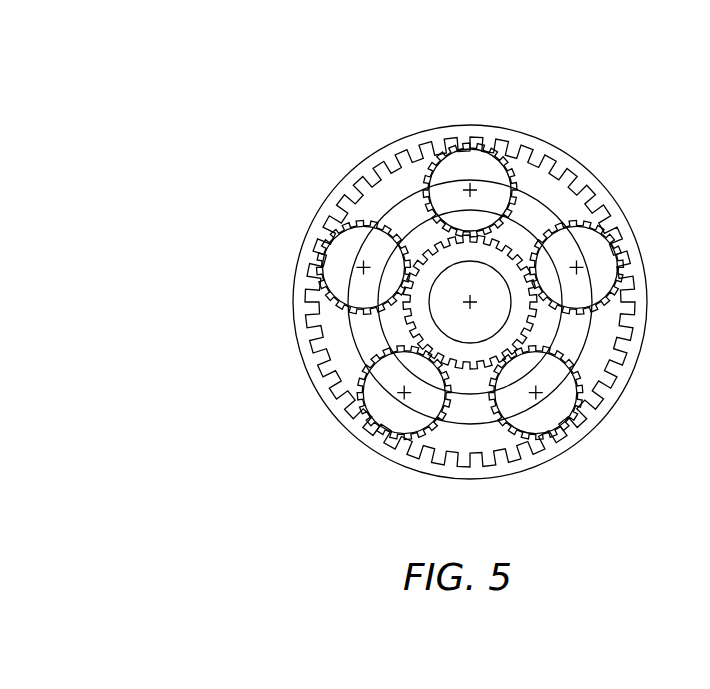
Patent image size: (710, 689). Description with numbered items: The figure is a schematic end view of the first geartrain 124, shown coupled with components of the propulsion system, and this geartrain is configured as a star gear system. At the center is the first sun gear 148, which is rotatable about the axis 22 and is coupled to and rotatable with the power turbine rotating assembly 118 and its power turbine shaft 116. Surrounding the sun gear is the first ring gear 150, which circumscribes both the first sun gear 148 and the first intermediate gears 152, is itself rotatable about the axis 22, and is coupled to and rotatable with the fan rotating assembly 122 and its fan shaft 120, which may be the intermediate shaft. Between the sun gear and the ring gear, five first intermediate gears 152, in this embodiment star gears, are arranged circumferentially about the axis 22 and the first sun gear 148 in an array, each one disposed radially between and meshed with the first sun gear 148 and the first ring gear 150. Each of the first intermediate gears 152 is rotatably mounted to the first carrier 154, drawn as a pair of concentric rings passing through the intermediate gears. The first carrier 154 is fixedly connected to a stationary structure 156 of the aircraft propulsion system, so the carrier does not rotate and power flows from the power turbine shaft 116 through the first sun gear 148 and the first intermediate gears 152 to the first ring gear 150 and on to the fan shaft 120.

The first geartrain 124 is at (398, 274).
The fan shaft 120 is at (367, 261).
The fan rotating assembly 122 is at (403, 137).
The first ring gear 150 is at (452, 122).
The first carrier 154 is at (403, 200).
The first intermediate gears 152 is at (398, 286).
The stationary structure 156 is at (138, 234).
The first sun gear 148 is at (540, 324).
The power turbine shaft 116 is at (299, 314).
The power turbine rotating assembly 118 is at (407, 326).
The axis 22 is at (470, 308).